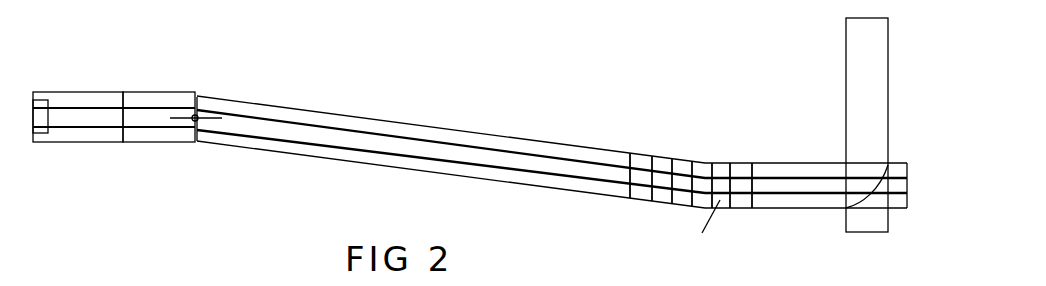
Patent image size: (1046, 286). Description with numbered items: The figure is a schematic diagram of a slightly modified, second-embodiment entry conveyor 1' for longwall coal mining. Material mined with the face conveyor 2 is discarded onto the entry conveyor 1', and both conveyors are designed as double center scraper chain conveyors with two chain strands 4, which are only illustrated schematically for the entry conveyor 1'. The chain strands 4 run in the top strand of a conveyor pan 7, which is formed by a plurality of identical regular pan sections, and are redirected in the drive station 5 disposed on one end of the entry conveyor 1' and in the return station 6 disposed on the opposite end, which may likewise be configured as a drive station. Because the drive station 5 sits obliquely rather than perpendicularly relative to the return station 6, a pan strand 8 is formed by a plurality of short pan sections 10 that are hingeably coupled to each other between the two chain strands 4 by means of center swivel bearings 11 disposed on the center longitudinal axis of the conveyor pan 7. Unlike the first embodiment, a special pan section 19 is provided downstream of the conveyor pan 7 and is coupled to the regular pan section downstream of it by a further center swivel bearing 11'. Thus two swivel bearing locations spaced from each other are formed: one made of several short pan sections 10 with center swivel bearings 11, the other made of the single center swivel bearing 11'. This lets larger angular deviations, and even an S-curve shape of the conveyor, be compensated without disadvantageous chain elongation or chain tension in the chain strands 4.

The entry conveyor 1' is at (552, 141).
The face conveyor 2 is at (846, 58).
The chain strands 4 is at (524, 152).
The drive station 5 is at (82, 105).
The return station 6 is at (897, 208).
The conveyor pan 7 is at (370, 125).
The pan strand 8 is at (690, 108).
The pan sections 10 is at (703, 160).
The center swivel bearing 11 is at (618, 142).
The swivel bearing 11' is at (224, 90).
The special pan section 19 is at (150, 108).